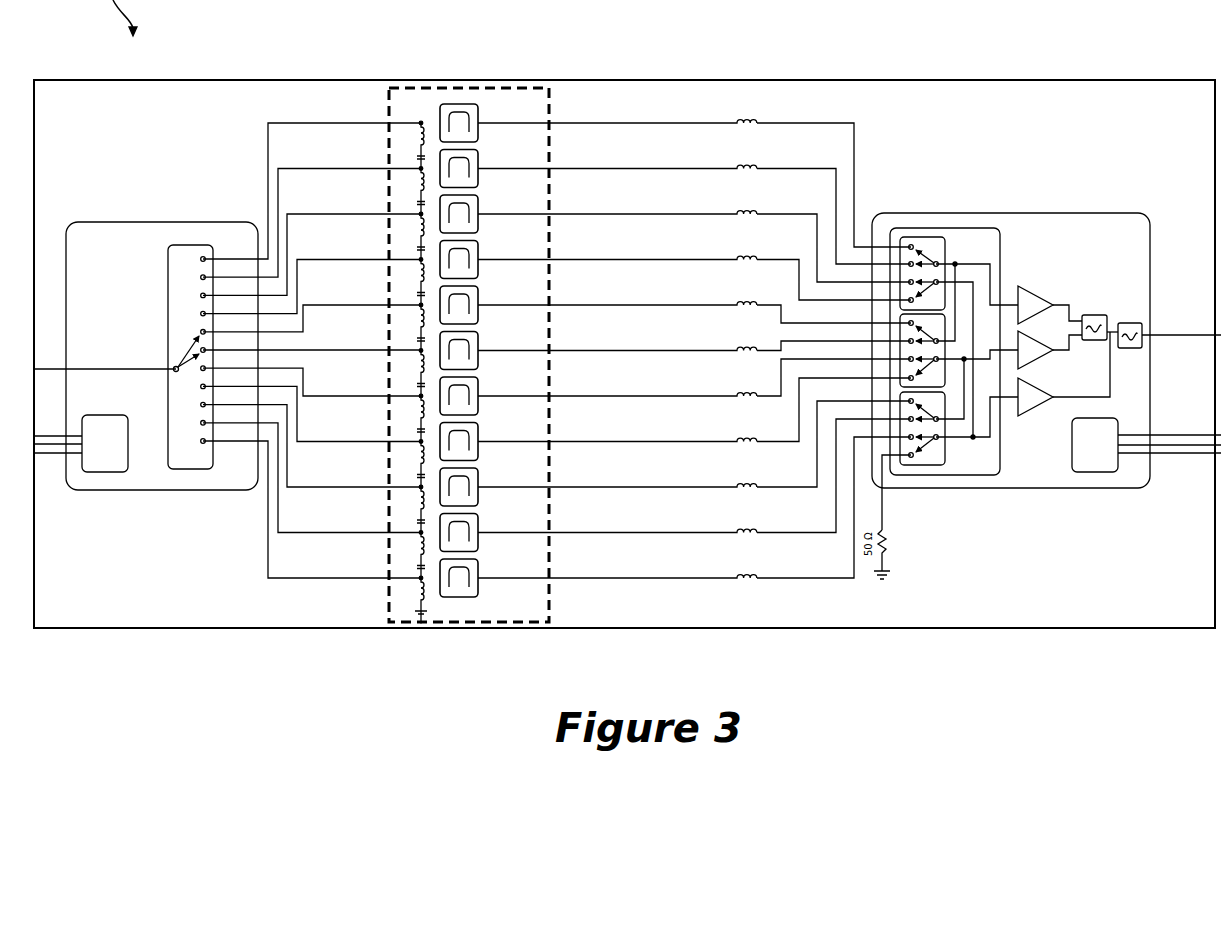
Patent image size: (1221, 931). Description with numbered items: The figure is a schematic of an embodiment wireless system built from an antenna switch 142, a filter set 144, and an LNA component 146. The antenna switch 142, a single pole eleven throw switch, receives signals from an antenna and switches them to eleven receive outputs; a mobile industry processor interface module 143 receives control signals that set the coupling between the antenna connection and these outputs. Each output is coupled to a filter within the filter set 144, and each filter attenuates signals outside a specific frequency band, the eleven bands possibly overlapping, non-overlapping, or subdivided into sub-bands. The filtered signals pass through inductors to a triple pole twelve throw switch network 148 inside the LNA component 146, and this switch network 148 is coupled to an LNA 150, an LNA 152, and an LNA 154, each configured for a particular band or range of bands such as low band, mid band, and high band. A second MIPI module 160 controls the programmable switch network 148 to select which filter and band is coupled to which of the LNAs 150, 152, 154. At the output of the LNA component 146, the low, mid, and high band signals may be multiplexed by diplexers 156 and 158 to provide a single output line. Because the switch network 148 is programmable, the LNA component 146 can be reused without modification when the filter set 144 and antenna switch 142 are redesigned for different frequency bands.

The antenna switch 142 is at (157, 222).
The MIPI module 143 is at (105, 472).
The filter set 144 is at (469, 87).
The LNA component 146 is at (1055, 214).
The 3P12T switch network 148 is at (963, 475).
The LNA 150 is at (1053, 305).
The LNA 152 is at (1044, 360).
The LNA 154 is at (1030, 412).
The diplexer 156 is at (1098, 315).
The diplexer 158 is at (1142, 343).
The MIPI module 160 is at (1093, 472).